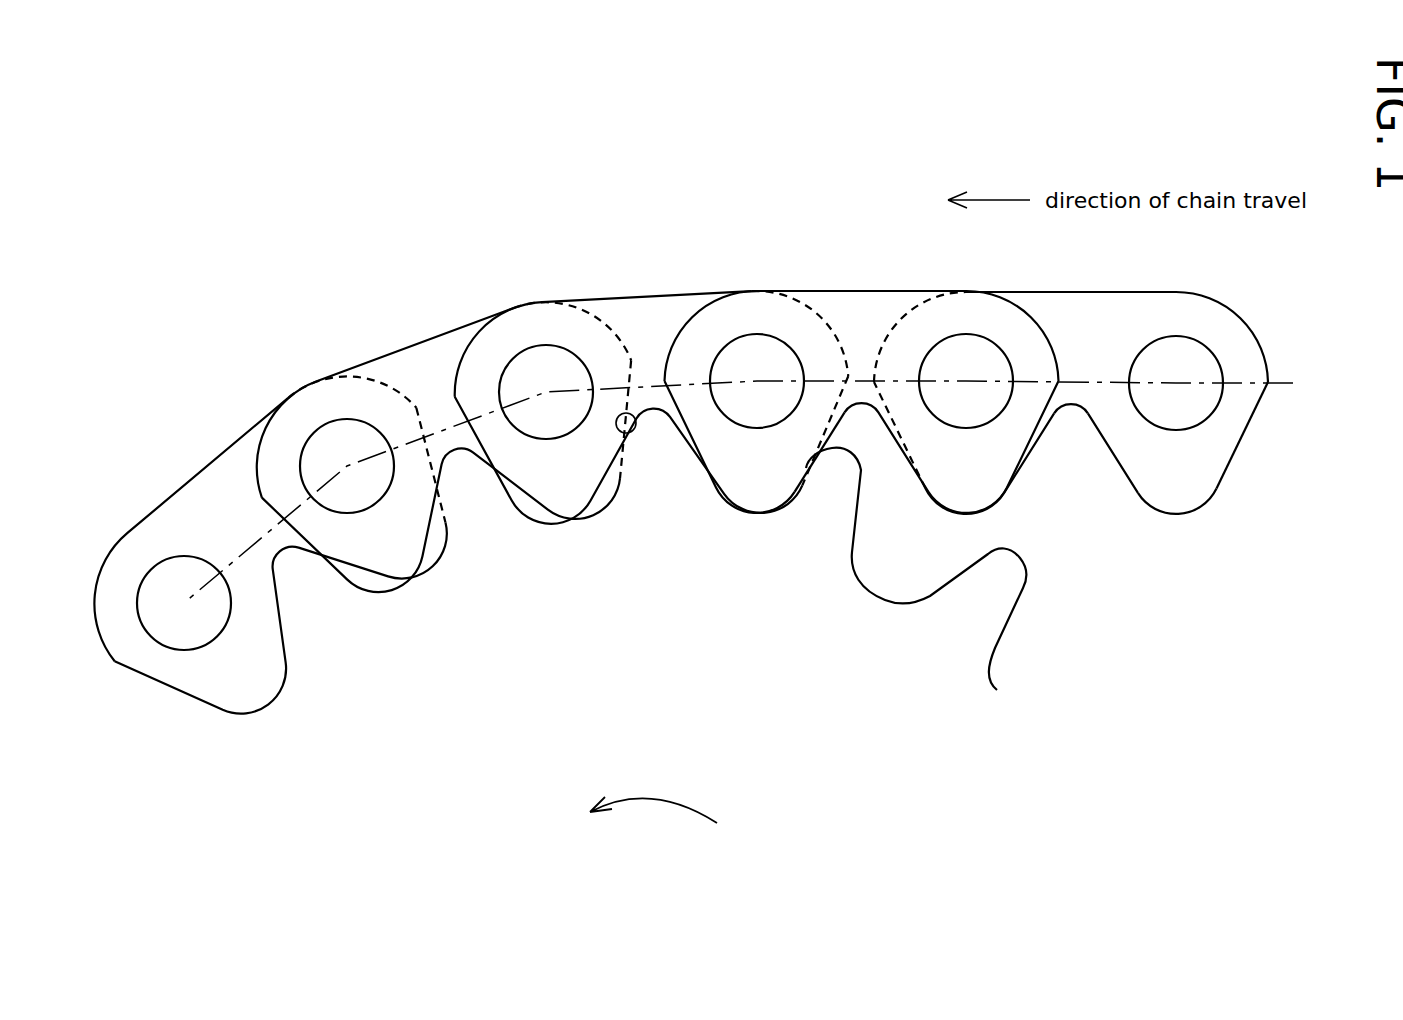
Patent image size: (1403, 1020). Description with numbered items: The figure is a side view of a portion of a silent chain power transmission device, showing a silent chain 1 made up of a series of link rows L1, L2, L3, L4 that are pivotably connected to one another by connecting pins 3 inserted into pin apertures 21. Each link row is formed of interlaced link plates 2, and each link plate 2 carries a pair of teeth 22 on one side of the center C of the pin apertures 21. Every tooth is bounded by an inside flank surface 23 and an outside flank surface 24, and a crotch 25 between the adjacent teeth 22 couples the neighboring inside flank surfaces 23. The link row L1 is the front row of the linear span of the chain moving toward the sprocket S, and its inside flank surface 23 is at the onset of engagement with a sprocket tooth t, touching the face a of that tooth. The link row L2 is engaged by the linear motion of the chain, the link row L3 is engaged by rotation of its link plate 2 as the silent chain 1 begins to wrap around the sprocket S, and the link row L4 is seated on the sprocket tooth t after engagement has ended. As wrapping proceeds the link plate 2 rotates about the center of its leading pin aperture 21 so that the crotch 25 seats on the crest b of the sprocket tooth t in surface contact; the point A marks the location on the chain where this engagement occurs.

The silent chain 1 is at (303, 317).
The link plate 2 is at (1053, 426).
The connecting pin 3 is at (1016, 362).
The pin aperture 21 is at (1000, 352).
The teeth 22 is at (1177, 539).
The inside flank surface 23 is at (974, 481).
The outside flank surface 24 is at (1253, 451).
The crotch 25 is at (1068, 440).
The link row L1 is at (862, 371).
The link row L2 is at (660, 298).
The link row L3 is at (432, 341).
The link row L4 is at (207, 468).
The face of sprocket tooth a is at (797, 452).
The point of engagement A is at (630, 437).
The crest of sprocket tooth b is at (268, 550).
The center of pin apertures C is at (1292, 378).
The sprocket S is at (674, 727).
The sprocket tooth t is at (1010, 582).